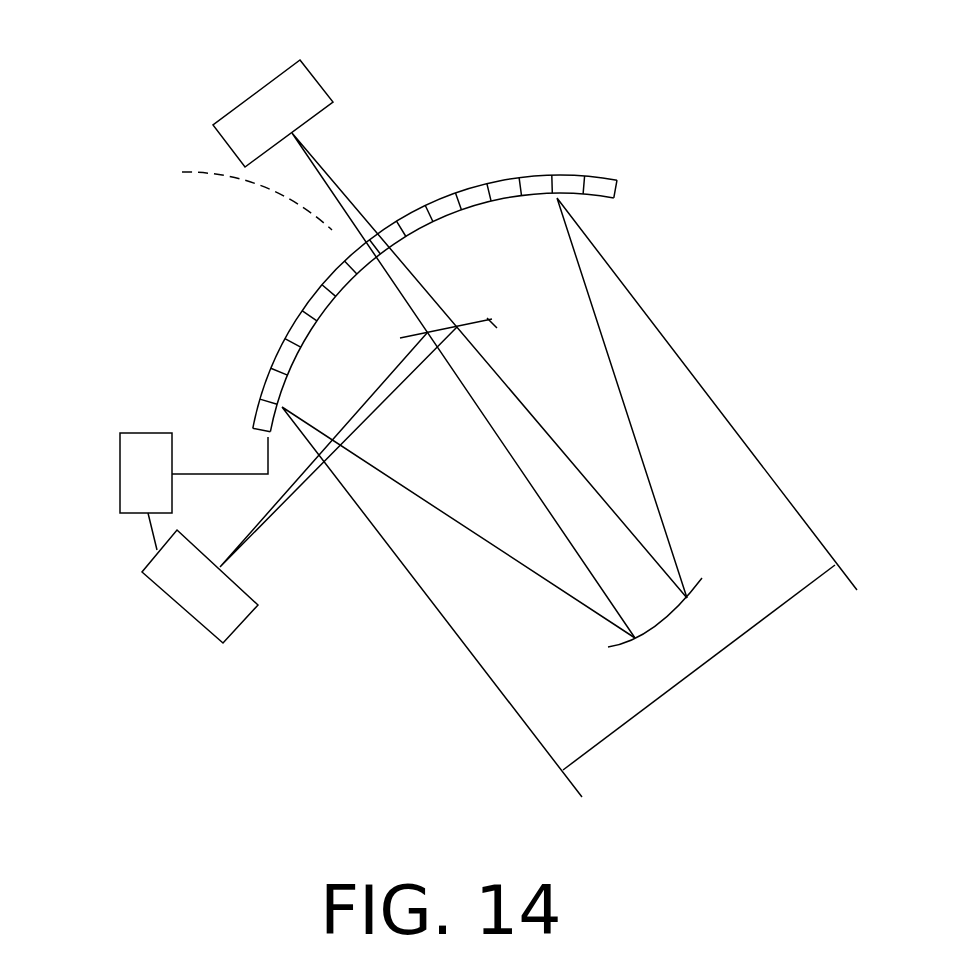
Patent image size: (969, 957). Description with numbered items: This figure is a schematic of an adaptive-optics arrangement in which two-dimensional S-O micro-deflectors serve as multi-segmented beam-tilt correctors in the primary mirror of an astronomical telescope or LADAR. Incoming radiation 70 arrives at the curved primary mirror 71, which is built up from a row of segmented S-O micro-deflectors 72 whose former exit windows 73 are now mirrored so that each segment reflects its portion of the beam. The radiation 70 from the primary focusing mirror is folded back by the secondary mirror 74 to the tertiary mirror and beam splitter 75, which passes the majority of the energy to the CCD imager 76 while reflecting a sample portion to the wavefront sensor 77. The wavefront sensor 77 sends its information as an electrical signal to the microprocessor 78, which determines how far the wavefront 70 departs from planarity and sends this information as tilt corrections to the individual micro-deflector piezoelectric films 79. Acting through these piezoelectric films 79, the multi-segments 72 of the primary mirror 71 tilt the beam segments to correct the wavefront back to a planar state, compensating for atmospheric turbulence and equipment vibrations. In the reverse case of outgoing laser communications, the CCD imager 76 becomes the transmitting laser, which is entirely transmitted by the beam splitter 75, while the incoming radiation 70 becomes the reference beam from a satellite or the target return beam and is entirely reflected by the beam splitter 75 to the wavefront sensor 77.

The incoming radiation 70 is at (678, 683).
The primary mirror 71 is at (237, 194).
The S-O micro-deflectors 72 is at (442, 213).
The former exit windows 73 is at (333, 273).
The secondary mirror 74 is at (680, 615).
The tertiary mirror and beam splitter 75 is at (498, 328).
The CCD imager 76 is at (252, 93).
The wavefront sensor 77 is at (178, 604).
The microprocessor 78 is at (120, 462).
The piezoelectric films 79 is at (302, 323).